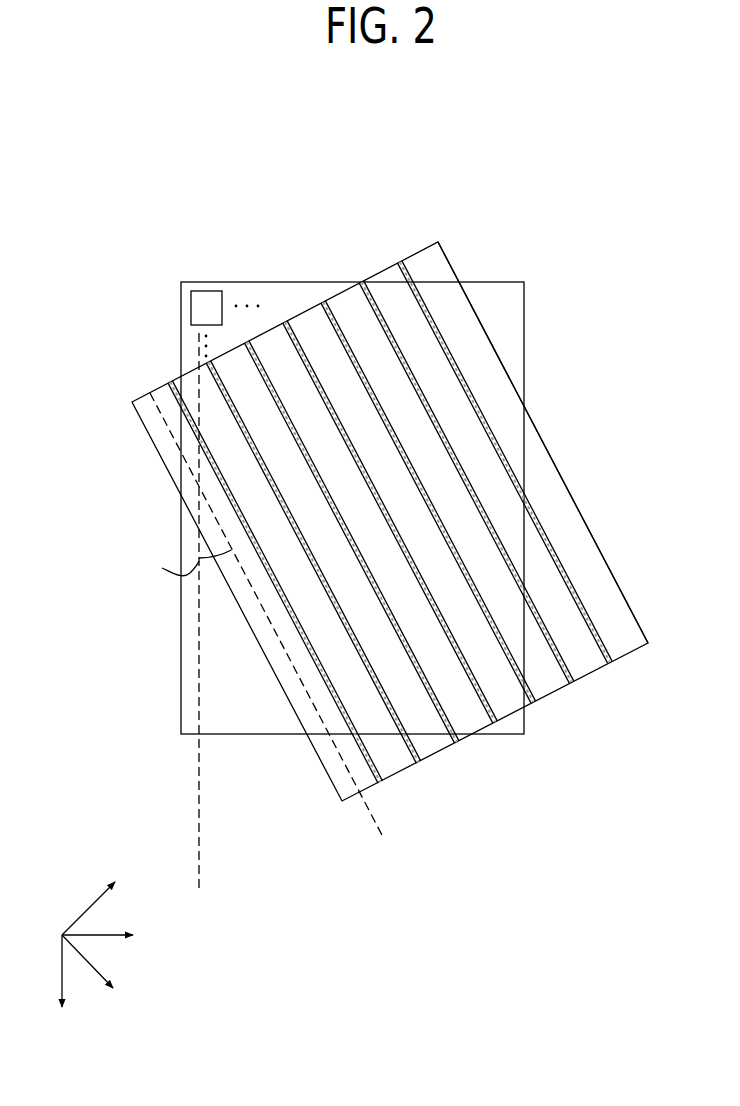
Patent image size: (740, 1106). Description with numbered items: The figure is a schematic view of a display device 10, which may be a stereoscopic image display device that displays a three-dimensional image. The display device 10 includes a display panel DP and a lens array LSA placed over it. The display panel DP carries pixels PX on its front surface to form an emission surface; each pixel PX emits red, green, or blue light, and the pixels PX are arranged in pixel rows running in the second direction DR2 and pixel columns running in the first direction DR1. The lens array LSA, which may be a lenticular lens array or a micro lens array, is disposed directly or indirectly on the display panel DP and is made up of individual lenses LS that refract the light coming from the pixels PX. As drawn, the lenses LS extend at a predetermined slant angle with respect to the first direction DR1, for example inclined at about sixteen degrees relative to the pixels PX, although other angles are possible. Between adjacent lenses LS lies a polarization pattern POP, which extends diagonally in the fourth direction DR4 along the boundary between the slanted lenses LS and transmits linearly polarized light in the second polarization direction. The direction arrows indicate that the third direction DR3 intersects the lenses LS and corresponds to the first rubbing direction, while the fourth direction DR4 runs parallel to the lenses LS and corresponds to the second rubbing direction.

The display device 10 is at (521, 181).
The display panel DP is at (505, 282).
The pixel PX is at (225, 324).
The lens array LSA is at (566, 482).
The lens LS is at (427, 253).
The polarization pattern POP is at (402, 262).
The first direction DR1 is at (116, 937).
The second direction DR2 is at (62, 986).
The third direction DR3 is at (107, 899).
The fourth direction DR4 is at (107, 973).